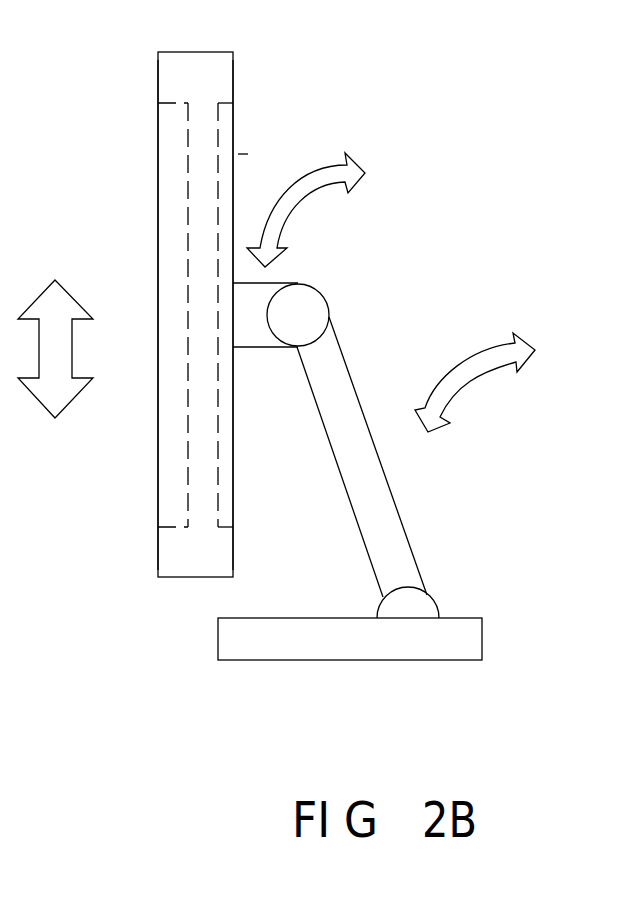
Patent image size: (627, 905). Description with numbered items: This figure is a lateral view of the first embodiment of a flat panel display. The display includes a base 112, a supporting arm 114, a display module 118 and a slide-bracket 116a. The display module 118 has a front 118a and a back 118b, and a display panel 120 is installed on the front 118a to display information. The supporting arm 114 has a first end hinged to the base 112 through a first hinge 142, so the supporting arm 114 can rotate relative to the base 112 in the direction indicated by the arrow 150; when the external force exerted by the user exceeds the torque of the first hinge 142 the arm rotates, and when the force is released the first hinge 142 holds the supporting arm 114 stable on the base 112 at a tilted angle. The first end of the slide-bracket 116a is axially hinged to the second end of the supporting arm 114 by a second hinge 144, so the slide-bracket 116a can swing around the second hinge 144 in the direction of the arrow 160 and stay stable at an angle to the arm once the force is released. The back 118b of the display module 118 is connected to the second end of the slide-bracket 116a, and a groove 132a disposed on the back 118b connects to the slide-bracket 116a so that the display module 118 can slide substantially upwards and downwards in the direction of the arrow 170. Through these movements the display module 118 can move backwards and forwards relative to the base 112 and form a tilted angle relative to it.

The base 112 is at (310, 648).
The supporting arm 114 is at (382, 553).
The slide-bracket 116a is at (253, 293).
The display module 118 is at (162, 52).
The front of the display module 118a is at (159, 80).
The back of the display module 118b is at (234, 80).
The display panel 120 is at (167, 173).
The groove 132a is at (222, 151).
The first hinge 142 is at (423, 605).
The second hinge 144 is at (305, 307).
The arrow 150 is at (530, 345).
The arrow 160 is at (353, 163).
The arrow 170 is at (62, 365).